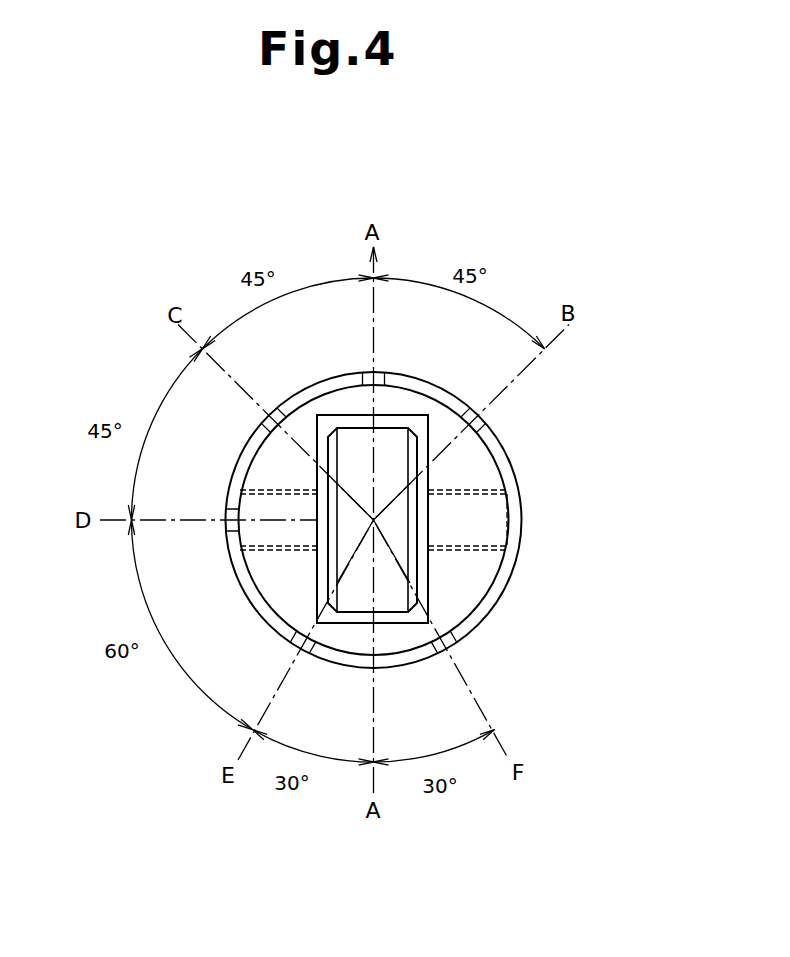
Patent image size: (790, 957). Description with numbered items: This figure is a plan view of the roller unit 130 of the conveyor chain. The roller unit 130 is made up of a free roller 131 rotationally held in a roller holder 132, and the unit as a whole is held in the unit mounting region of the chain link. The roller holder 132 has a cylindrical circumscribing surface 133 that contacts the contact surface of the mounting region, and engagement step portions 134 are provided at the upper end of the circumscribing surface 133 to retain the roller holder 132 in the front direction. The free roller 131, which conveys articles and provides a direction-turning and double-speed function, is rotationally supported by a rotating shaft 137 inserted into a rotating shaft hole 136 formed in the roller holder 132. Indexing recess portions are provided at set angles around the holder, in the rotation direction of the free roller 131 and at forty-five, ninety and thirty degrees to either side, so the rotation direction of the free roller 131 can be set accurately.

The roller unit 130 is at (527, 445).
The free roller 131 is at (400, 548).
The roller holder 132 is at (289, 592).
The circumscribing surface 133 is at (240, 587).
The engagement step portion 134 is at (345, 406).
The rotating shaft hole 136 is at (523, 518).
The rotating shaft 137 is at (469, 505).